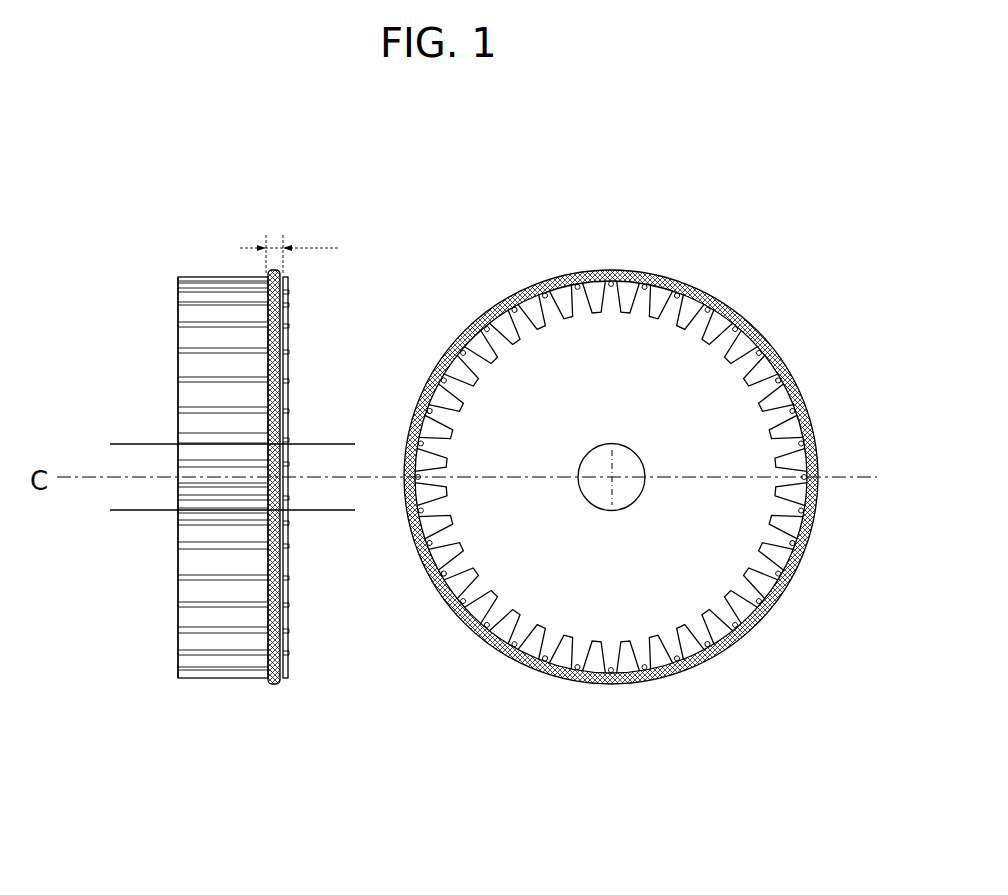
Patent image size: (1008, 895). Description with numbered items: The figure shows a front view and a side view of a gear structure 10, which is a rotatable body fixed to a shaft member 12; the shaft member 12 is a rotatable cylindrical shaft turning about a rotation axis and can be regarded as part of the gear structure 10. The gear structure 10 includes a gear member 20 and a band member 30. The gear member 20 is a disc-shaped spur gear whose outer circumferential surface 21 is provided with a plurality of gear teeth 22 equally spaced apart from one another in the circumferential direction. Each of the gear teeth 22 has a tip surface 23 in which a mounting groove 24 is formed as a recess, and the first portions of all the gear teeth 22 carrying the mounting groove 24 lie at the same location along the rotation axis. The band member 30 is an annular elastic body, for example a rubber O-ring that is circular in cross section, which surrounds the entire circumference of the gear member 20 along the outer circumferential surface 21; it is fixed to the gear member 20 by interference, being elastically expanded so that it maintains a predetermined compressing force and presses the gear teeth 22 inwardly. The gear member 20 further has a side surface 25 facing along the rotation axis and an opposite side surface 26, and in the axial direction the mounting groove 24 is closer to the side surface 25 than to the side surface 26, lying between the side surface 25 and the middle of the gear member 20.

The gear structure 10 is at (212, 692).
The shaft member 12 is at (145, 444).
The gear member 20 is at (213, 277).
The outer circumferential surface 21 is at (628, 272).
The gear teeth 22 is at (178, 604).
The tip surface 23 is at (511, 297).
The mounting groove 24 is at (290, 247).
The side surface 25 is at (290, 318).
The side surface 26 is at (178, 315).
The band member 30 is at (277, 685).